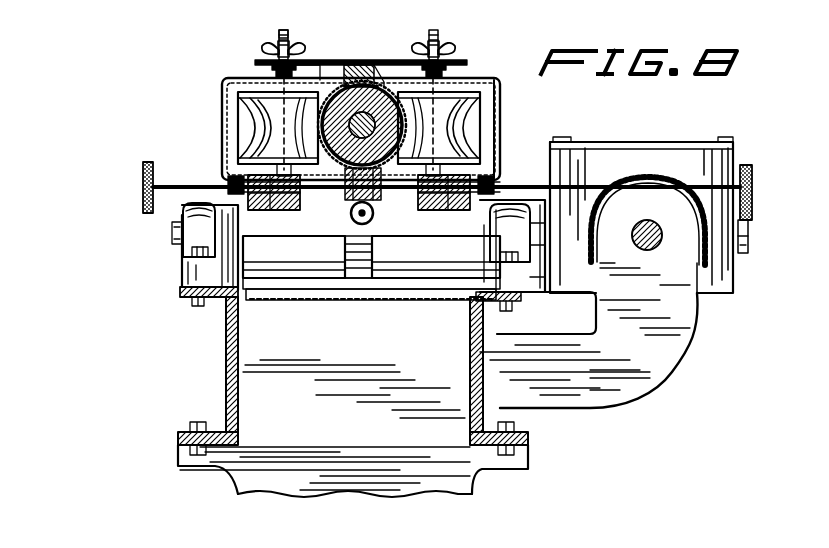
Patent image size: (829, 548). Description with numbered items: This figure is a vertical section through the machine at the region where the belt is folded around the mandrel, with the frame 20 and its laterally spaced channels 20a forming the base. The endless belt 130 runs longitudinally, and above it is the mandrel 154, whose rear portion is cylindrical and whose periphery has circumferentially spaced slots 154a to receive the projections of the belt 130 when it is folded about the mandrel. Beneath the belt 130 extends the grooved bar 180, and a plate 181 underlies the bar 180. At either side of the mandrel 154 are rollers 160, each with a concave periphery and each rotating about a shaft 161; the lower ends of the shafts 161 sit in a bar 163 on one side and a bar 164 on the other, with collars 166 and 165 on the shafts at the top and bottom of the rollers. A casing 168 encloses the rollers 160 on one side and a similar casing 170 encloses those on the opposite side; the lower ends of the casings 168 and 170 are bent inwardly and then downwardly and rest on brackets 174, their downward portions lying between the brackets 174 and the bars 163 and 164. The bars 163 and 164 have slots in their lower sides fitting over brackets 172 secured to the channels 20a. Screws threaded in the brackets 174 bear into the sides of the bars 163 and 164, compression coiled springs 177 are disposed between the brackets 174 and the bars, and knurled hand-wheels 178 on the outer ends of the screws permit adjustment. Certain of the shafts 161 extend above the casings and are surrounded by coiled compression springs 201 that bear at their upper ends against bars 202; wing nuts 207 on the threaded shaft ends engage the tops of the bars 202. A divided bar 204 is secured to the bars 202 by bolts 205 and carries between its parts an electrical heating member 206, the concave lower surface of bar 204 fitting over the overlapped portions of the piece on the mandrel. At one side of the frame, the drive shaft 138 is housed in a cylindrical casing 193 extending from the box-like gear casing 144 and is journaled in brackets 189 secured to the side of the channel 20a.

The frame 20 is at (213, 402).
The channel 20a is at (227, 362).
The endless belt 130 is at (392, 302).
The shaft 138 is at (644, 250).
The box-like casing 144 is at (694, 142).
The mandrel 154 is at (337, 88).
The slots 154a is at (348, 200).
The rollers 160 is at (236, 110).
The shaft 161 is at (434, 30).
The bar 163 is at (251, 236).
The bar 164 is at (449, 236).
The collar 165 is at (482, 168).
The collar 166 is at (498, 88).
The casing 168 is at (228, 79).
The casing 170 is at (468, 64).
The bracket 172 is at (514, 286).
The bracket 174 is at (228, 182).
The compression coiled spring 177 is at (262, 212).
The hand-wheel 178 is at (143, 180).
The bar 180 is at (376, 218).
The plate 181 is at (285, 28).
The bracket 189 is at (677, 348).
The cylindrical casing 193 is at (660, 177).
The coiled compression spring 201 is at (272, 68).
The bar 202 is at (308, 60).
The bar 204 is at (384, 70).
The bolt 205 is at (370, 50).
The electrical heating member 206 is at (378, 86).
The wing nut 207 is at (268, 44).